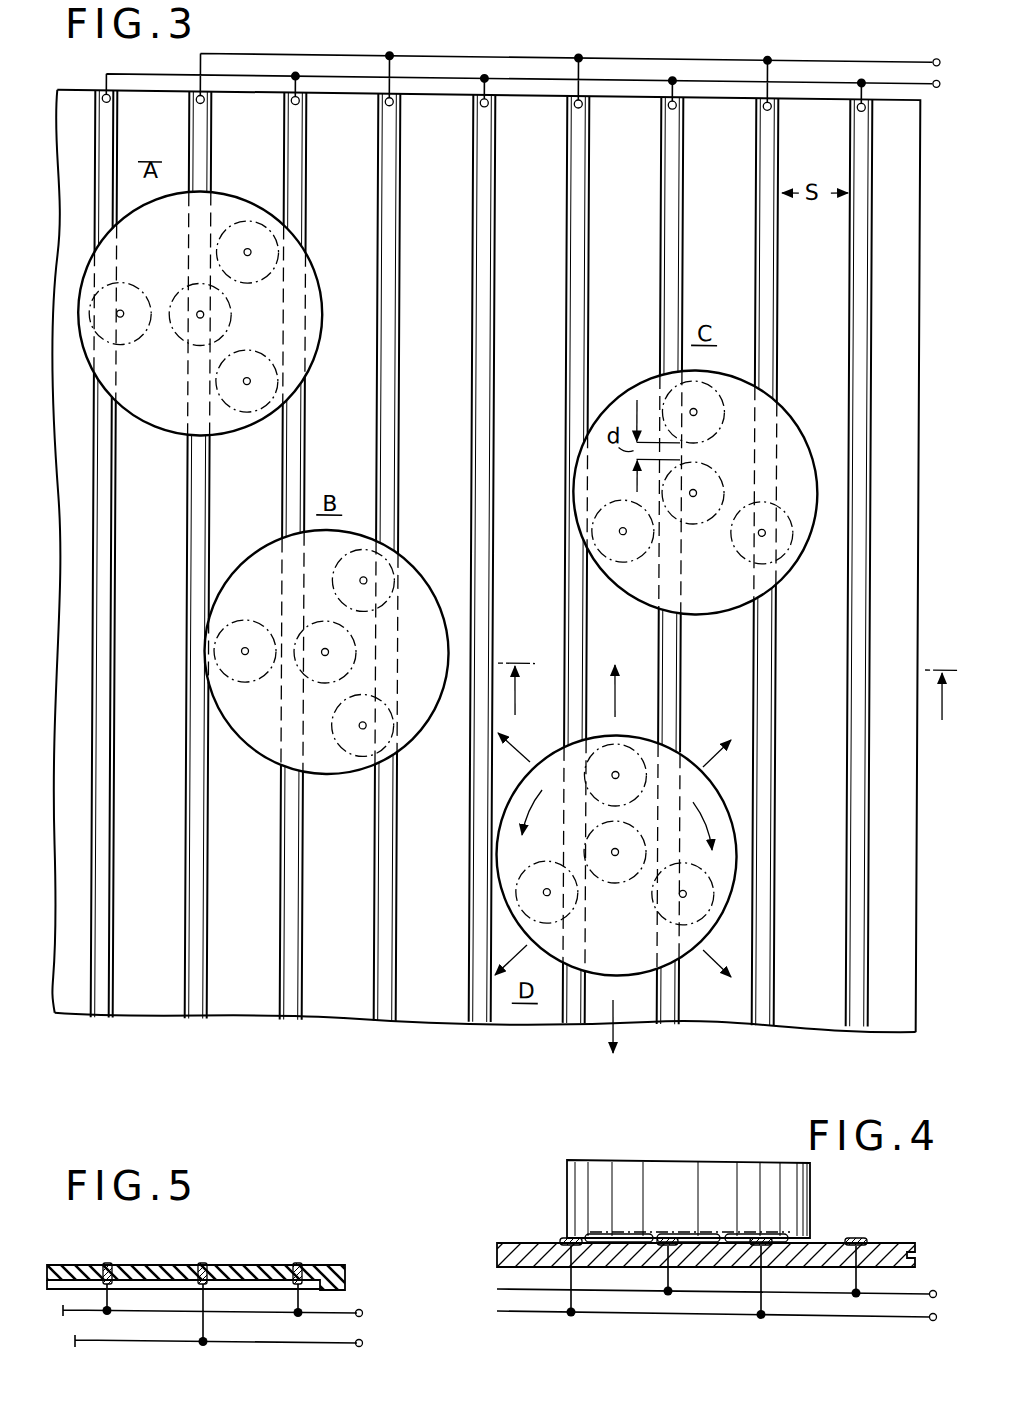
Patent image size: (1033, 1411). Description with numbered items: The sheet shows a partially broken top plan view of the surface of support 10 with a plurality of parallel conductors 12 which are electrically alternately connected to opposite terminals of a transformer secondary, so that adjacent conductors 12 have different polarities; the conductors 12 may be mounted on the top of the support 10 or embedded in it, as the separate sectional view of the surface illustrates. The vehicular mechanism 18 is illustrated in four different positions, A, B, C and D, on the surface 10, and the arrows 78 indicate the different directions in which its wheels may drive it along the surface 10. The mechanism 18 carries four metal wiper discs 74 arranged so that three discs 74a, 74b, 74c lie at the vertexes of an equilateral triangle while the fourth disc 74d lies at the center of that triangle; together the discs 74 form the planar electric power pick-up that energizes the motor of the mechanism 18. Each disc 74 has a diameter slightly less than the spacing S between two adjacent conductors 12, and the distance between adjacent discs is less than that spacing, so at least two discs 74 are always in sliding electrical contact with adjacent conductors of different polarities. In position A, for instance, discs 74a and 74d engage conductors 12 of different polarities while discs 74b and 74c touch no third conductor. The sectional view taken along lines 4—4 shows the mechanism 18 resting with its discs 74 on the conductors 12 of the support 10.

In FIG. 3, the surface of support 10 is at (155, 1022).
In FIG. 4, the surface of support 10 is at (521, 1244).
In FIG. 5, the surface of support 10 is at (152, 1263).
In FIG. 3, the parallel conductors 12 is at (198, 864).
In FIG. 4, the parallel conductors 12 is at (567, 1239).
In FIG. 5, the parallel conductors 12 is at (108, 1262).
In FIG. 3, the vehicular mechanism 18 is at (236, 203).
In FIG. 4, the vehicular mechanism 18 is at (622, 1165).
In FIG. 3, the discs 74 is at (301, 687).
In FIG. 4, the discs 74 is at (668, 1232).
In FIG. 3, the disc 74a is at (132, 287).
In FIG. 3, the disc 74b is at (271, 246).
In FIG. 3, the disc 74c is at (246, 416).
In FIG. 3, the disc 74d is at (174, 334).
In FIG. 3, the arrows 78 is at (621, 688).
In FIG. 3, the section lines 4— 4 is at (728, 677).